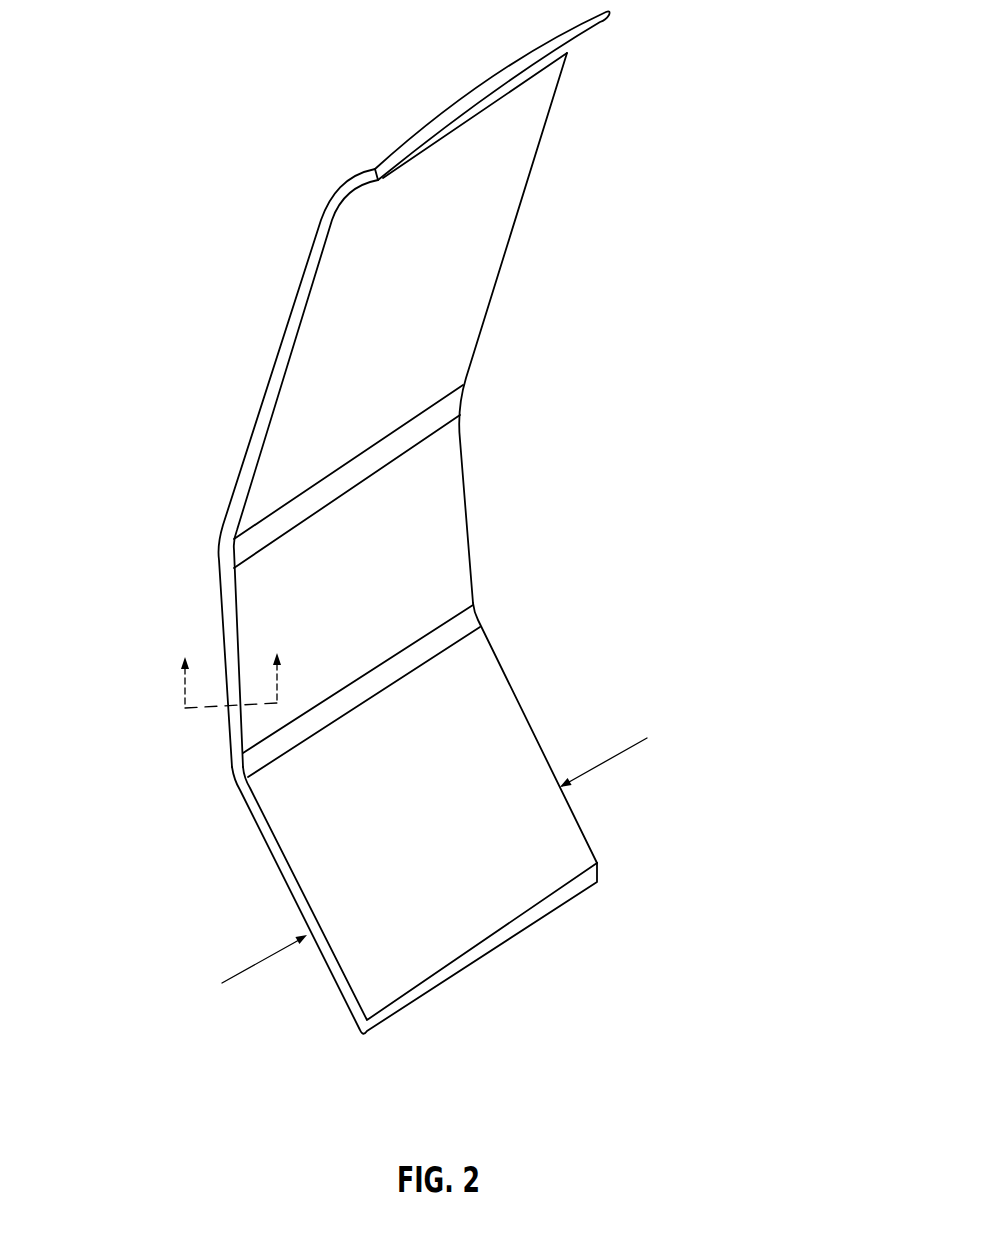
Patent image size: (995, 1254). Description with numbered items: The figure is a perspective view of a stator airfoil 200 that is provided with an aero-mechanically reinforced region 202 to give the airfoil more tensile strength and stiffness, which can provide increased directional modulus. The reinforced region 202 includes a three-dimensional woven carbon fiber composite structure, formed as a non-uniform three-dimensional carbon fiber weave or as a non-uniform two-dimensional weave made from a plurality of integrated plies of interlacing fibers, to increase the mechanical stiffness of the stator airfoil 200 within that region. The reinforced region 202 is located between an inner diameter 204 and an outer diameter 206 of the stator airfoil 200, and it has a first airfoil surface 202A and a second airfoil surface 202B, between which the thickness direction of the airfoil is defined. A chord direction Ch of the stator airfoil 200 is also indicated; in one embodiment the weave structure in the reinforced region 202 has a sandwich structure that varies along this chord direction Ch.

The stator airfoil 200 is at (448, 522).
The aero-mechanically reinforced region 202 is at (496, 666).
The first airfoil surface 202A is at (428, 604).
The second airfoil surface 202B is at (218, 620).
The inner diameter 204 is at (497, 937).
The outer diameter 206 is at (492, 95).
The chord direction Ch is at (610, 760).